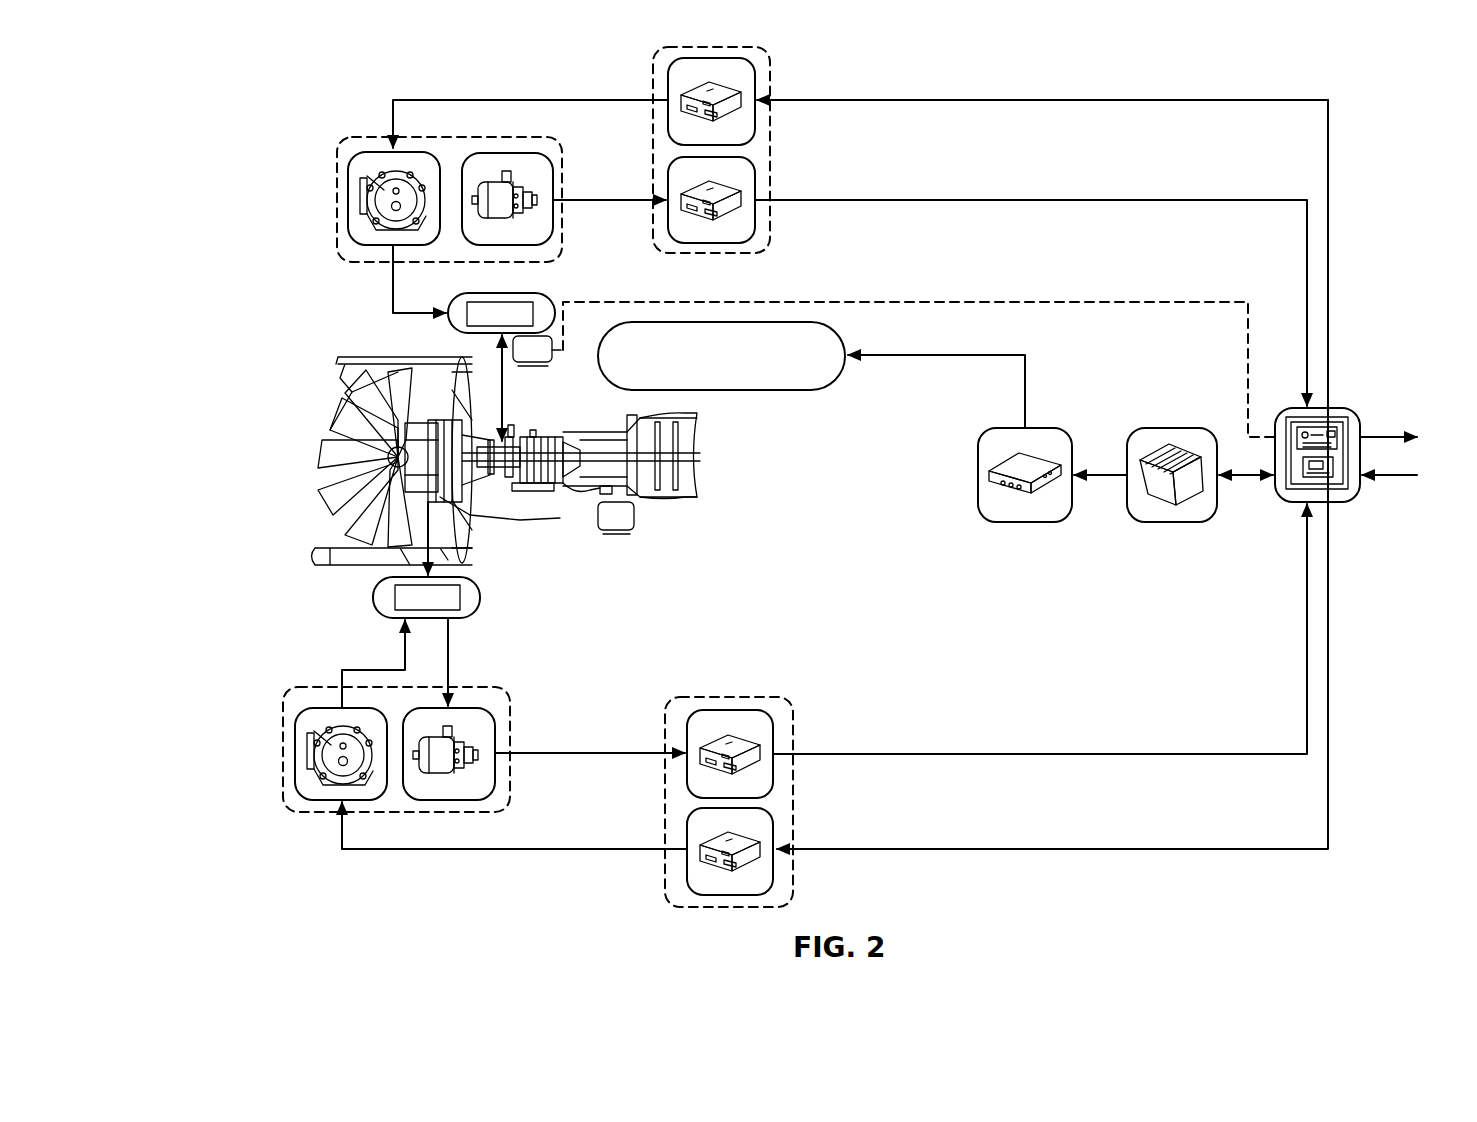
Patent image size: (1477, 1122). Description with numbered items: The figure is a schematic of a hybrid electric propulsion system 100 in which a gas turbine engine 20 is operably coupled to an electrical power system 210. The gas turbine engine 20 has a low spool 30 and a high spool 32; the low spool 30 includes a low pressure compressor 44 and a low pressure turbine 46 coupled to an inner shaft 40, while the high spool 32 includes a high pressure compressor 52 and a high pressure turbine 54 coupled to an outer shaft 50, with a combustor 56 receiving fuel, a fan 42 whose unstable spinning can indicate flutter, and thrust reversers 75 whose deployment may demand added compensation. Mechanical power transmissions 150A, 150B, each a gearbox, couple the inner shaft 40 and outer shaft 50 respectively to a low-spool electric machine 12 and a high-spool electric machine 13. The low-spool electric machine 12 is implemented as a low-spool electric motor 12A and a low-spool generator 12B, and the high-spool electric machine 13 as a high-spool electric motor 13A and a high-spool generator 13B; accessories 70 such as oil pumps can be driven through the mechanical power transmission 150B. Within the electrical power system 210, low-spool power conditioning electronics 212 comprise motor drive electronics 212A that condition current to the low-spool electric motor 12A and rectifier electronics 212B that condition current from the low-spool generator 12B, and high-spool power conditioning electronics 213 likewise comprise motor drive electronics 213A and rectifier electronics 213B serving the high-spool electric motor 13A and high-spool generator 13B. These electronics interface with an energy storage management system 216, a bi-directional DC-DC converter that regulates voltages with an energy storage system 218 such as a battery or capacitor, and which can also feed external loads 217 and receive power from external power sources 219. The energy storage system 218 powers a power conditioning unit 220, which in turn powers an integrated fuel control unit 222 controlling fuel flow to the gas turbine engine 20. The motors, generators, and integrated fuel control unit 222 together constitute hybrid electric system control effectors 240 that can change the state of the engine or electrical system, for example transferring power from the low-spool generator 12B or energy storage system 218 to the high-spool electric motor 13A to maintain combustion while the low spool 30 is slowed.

The hybrid electric propulsion system 100 is at (178, 122).
The gas turbine engine 20 is at (308, 373).
The low spool 30 is at (470, 445).
The high spool 32 is at (590, 462).
The inner shaft 40 is at (398, 455).
The fan 42 is at (346, 522).
The low pressure compressor 44 is at (482, 520).
The low pressure turbine 46 is at (636, 490).
The outer shaft 50 is at (500, 443).
The high pressure compressor 52 is at (545, 486).
The high pressure turbine 54 is at (672, 495).
The combustor 56 is at (572, 490).
The accessories 70 is at (538, 351).
The thrust reversers 75 is at (616, 510).
The low-spool electric machine 12 is at (458, 687).
The low-spool electric motor 12A is at (295, 765).
The low-spool generator 12B is at (495, 740).
The high-spool electric machine 13 is at (372, 138).
The high-spool electric motor 13A is at (348, 200).
The high-spool generator 13B is at (555, 155).
The mechanical power transmission 150A is at (480, 600).
The mechanical power transmission 150B is at (487, 293).
The electrical power system 210 is at (562, 278).
The low-spool power conditioning electronics 212 is at (703, 697).
The motor drive electronics 212A is at (770, 816).
The rectifier electronics 212B is at (770, 718).
The high-spool power conditioning electronics 213 is at (773, 80).
The motor drive electronics 213A is at (668, 88).
The rectifier electronics 213B is at (770, 182).
The energy storage management system 216 is at (1358, 496).
The external loads 217 is at (1393, 437).
The energy storage system 218 is at (1170, 522).
The external power sources 219 is at (1405, 475).
The power conditioning unit 220 is at (1025, 522).
The integrated fuel control unit 222 is at (790, 390).
The hybrid electric system control effectors 240 is at (960, 266).